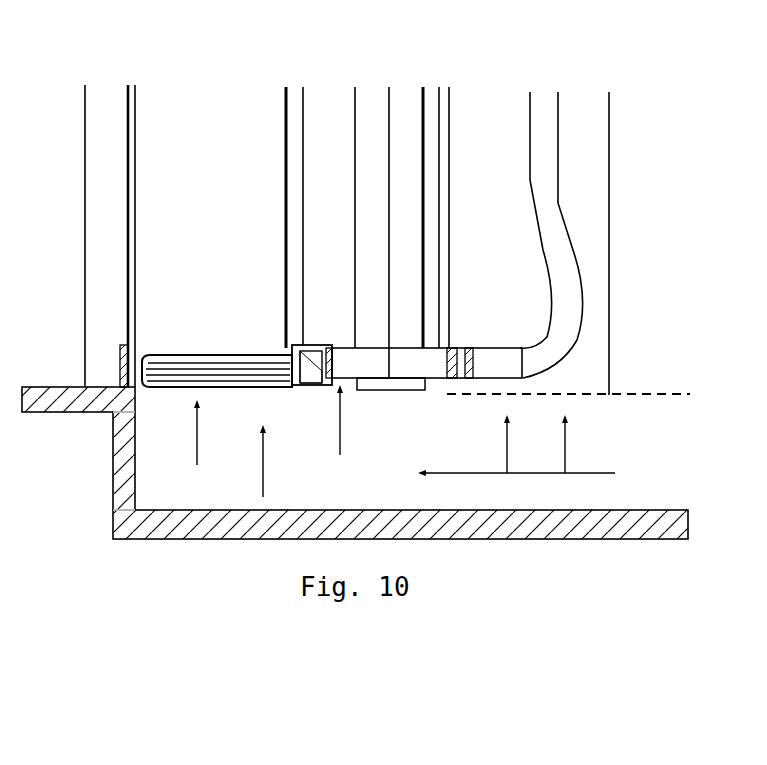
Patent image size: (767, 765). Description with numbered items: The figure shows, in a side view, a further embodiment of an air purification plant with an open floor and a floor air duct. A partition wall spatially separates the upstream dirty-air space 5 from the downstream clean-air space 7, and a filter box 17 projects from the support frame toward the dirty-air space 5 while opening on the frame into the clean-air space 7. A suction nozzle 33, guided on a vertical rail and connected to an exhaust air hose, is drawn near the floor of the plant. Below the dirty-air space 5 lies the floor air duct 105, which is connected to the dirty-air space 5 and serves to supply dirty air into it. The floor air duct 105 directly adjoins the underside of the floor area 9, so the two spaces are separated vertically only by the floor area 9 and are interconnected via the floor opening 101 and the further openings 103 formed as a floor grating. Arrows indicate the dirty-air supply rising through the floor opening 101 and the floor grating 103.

The dirty-air space 5 is at (666, 197).
The clean-air space 7 is at (73, 219).
The floor area 9 is at (657, 395).
The filter box 17 is at (230, 198).
The suction nozzle 33 is at (228, 387).
The floor opening 101 is at (262, 396).
The further openings 103 is at (535, 392).
The floor air duct 105 is at (704, 461).